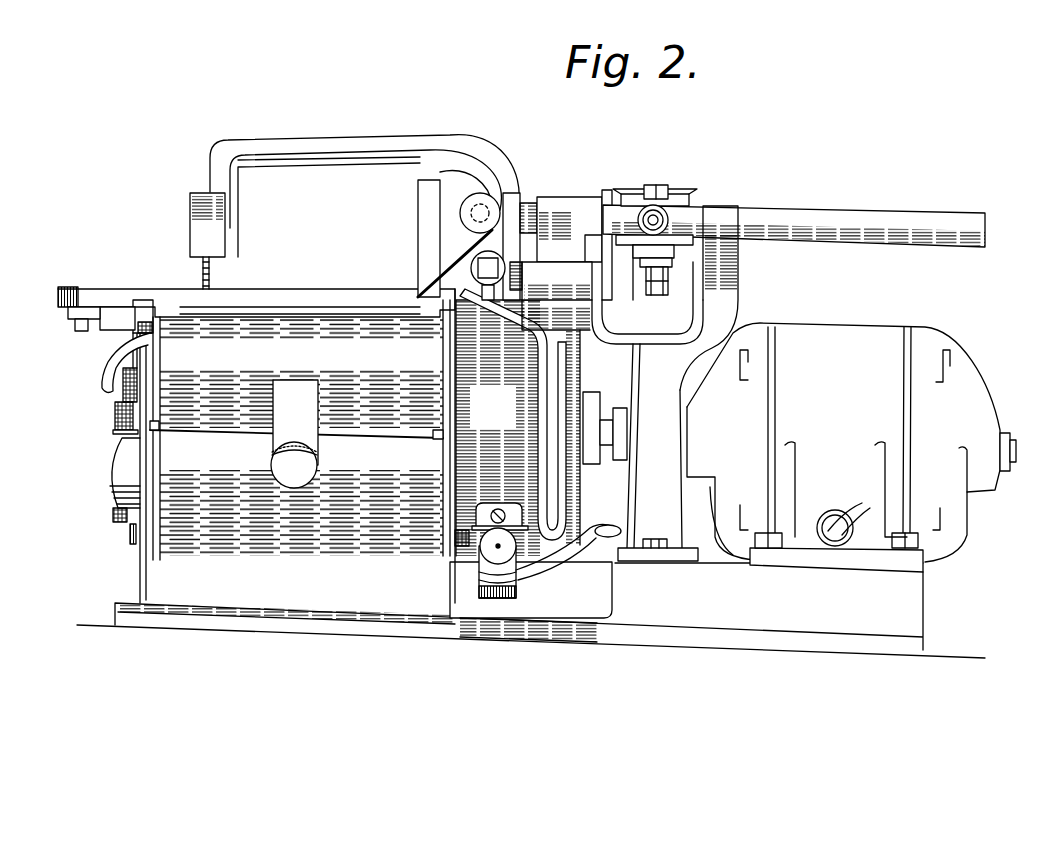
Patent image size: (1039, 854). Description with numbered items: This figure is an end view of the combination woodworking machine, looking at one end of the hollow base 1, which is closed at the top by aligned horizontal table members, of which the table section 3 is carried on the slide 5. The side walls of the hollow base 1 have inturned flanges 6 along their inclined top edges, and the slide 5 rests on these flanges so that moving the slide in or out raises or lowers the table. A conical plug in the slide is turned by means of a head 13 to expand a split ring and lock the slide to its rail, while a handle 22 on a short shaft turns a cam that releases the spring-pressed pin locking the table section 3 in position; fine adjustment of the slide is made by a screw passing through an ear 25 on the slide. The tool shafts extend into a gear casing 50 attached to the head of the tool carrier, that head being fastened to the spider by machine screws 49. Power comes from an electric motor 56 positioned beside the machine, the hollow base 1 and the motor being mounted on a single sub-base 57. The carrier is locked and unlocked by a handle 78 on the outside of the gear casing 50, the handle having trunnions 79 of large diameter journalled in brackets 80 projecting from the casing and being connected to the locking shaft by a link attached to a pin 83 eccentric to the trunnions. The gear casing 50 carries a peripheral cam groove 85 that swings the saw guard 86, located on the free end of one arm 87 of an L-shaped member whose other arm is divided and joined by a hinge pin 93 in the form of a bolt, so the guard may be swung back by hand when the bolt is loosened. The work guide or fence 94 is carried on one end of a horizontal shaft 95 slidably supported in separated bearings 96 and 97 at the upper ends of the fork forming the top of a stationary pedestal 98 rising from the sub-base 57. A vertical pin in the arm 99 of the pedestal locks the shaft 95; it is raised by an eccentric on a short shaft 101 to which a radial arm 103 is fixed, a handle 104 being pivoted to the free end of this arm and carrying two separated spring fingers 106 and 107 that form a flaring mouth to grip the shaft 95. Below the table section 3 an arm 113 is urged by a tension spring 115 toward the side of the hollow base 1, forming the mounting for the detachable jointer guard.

The hollow base 1 is at (140, 582).
The table section 3 is at (247, 292).
The slide 5 is at (282, 446).
The inturned flange 6 is at (154, 432).
The head 13 is at (123, 388).
The handle 22 is at (103, 378).
The ear 25 is at (302, 464).
The machine screw 49 is at (115, 426).
The gear casing 50 is at (541, 428).
The electric motor 56 is at (851, 447).
The sub-base 57 is at (575, 640).
The handle 78 is at (592, 537).
The trunnion 79 is at (497, 548).
The bracket 80 is at (477, 537).
The pin 83 is at (500, 578).
The peripheral cam groove 85 is at (548, 420).
The guard 86 is at (190, 226).
The arm 87 is at (290, 140).
The hinge pin 93 is at (470, 267).
The work guide or fence 94 is at (418, 206).
The horizontal shaft 95 is at (806, 214).
The bearing 96 is at (568, 204).
The bearing 97 is at (723, 208).
The stationary pedestal 98 is at (658, 452).
The arm 99 is at (600, 322).
The short shaft 101 is at (664, 295).
The radial arm 103 is at (660, 266).
The handle 104 is at (648, 203).
The spring finger 106 is at (682, 193).
The spring finger 107 is at (690, 246).
The arm 113 is at (68, 315).
The tension spring 115 is at (75, 331).